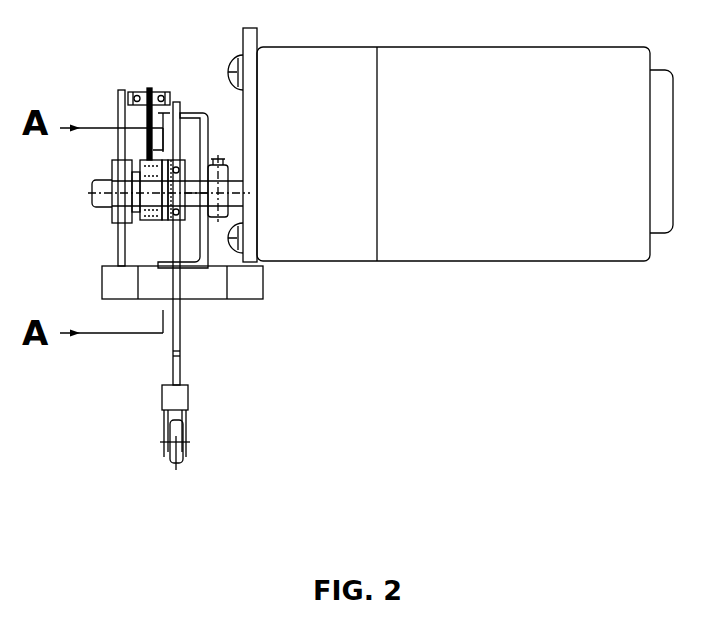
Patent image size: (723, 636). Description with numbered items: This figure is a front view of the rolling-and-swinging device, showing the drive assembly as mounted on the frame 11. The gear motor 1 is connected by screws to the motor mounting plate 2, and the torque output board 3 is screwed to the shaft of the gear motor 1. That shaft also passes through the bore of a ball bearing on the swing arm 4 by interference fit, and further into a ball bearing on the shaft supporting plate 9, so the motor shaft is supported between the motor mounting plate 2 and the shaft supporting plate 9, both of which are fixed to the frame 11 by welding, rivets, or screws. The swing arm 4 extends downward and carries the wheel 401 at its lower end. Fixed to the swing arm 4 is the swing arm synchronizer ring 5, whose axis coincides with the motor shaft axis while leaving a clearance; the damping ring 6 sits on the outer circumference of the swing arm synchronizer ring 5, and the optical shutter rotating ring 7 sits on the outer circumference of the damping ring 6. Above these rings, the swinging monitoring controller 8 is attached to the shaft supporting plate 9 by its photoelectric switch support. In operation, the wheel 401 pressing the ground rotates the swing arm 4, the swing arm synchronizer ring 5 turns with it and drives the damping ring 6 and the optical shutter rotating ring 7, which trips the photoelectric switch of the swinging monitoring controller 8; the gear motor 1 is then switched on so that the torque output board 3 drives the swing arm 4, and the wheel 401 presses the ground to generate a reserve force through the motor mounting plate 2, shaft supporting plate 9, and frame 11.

The gear motor 1 is at (340, 247).
The motor mounting plate 2 is at (253, 247).
The torque output board 3 is at (193, 267).
The swing arm 4 is at (177, 293).
The wheel 401 is at (167, 457).
The swing arm synchronizer ring 5 is at (168, 225).
The damping ring 6 is at (160, 222).
The optical shutter rotating ring 7 is at (150, 222).
The swinging monitoring controller 8 is at (128, 102).
The shaft supporting plate 9 is at (118, 152).
The frame 11 is at (102, 283).